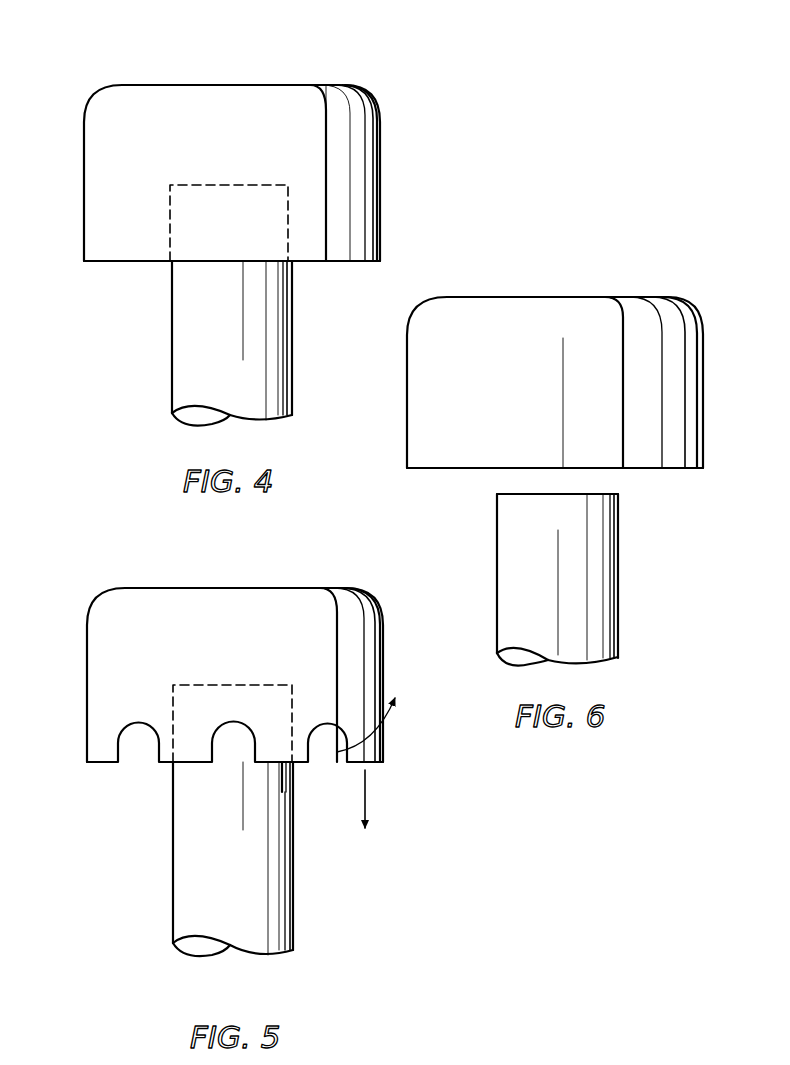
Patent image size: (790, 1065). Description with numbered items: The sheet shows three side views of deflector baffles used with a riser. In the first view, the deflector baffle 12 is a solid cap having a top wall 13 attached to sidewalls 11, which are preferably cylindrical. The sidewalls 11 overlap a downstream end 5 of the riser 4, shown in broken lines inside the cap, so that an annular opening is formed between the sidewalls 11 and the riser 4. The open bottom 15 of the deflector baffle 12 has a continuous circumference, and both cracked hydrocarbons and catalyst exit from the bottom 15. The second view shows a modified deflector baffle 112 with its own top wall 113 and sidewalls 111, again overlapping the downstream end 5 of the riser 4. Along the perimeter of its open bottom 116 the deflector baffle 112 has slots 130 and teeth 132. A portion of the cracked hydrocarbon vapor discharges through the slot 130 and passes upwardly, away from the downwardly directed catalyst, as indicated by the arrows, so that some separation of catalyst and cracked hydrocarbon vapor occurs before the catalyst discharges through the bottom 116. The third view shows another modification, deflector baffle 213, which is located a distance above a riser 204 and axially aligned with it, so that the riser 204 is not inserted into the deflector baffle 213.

In FIG. 4, the riser 4 is at (292, 372).
In FIG. 5, the riser 4 is at (183, 890).
In FIG. 4, the downstream end 5 is at (288, 190).
In FIG. 5, the downstream end 5 is at (292, 692).
In FIG. 4, the sidewalls 11 is at (84, 170).
In FIG. 4, the deflector baffle 12 is at (388, 183).
In FIG. 4, the top wall 13 is at (298, 85).
In FIG. 4, the open bottom 15 is at (138, 262).
In FIG. 5, the sidewalls 111 is at (87, 650).
In FIG. 5, the deflector baffle 112 is at (384, 600).
In FIG. 5, the top wall 113 is at (270, 588).
In FIG. 5, the open bottom 116 is at (165, 764).
In FIG. 5, the slots 130 is at (328, 748).
In FIG. 5, the teeth 132 is at (290, 808).
In FIG. 6, the riser 204 is at (656, 570).
In FIG. 6, the deflector baffle 213 is at (533, 297).